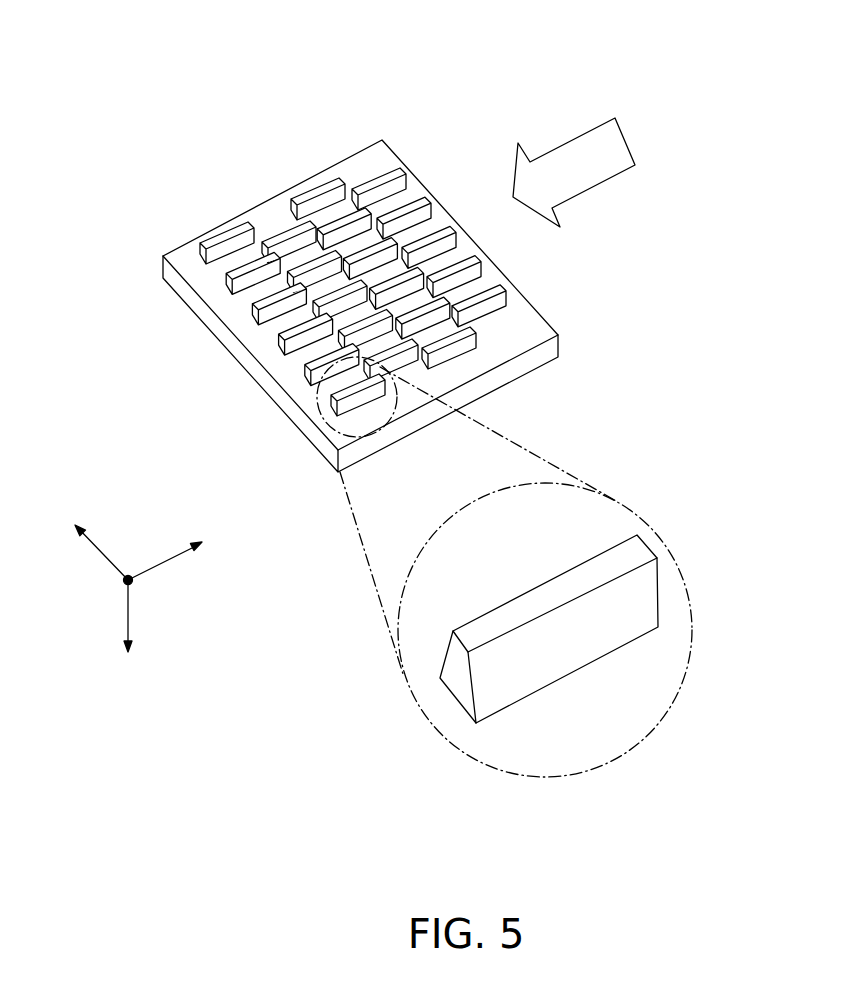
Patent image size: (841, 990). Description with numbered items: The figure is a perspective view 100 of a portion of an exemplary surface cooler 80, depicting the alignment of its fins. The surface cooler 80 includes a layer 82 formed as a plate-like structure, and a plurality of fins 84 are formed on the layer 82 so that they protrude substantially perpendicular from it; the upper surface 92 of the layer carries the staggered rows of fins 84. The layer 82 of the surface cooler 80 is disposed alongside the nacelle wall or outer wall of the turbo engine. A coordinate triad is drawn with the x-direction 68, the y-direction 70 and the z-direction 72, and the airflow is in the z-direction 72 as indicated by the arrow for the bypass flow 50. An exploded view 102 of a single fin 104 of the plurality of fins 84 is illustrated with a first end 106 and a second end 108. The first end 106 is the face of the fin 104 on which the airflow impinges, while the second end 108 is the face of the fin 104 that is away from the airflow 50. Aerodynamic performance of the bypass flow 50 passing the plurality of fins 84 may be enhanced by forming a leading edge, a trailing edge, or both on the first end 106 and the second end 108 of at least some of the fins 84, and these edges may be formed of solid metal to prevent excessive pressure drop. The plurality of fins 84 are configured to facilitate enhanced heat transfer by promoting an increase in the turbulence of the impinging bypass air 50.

The perspective view 100 is at (222, 67).
The bypass flow 50 is at (600, 189).
The X axis 68 is at (103, 558).
The Y axis 70 is at (130, 605).
The z-direction 72 is at (172, 560).
The surface cooler 80 is at (366, 306).
The layer 82 is at (215, 323).
The plurality of fins 84 is at (414, 200).
The plate top surface 92 is at (535, 318).
The exploded view 102 is at (624, 505).
The fin 104 is at (676, 628).
The first end 106 is at (659, 557).
The second end 108 is at (462, 677).